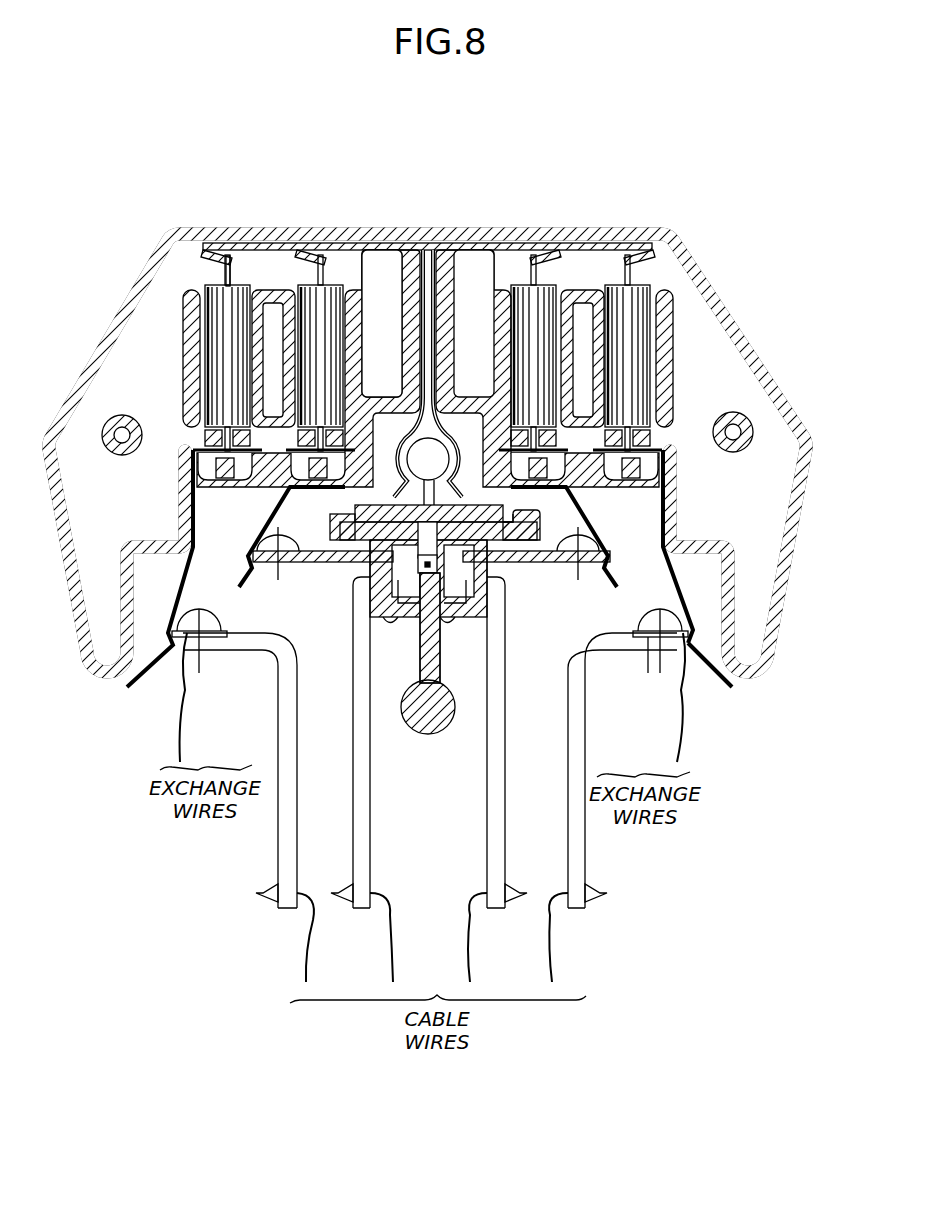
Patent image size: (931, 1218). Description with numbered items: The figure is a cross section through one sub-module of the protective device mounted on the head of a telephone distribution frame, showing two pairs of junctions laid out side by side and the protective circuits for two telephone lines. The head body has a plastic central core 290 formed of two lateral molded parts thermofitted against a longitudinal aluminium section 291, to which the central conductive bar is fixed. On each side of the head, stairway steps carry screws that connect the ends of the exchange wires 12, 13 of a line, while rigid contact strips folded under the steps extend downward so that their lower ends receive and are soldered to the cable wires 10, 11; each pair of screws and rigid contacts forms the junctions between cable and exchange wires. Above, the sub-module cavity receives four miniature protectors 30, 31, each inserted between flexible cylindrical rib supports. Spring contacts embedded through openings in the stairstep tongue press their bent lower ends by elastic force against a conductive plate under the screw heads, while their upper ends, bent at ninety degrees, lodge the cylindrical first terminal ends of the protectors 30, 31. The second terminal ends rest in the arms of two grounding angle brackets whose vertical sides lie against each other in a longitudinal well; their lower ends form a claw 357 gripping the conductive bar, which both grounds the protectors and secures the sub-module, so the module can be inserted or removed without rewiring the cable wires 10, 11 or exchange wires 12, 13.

The miniature protector 30 is at (213, 357).
The miniature protector 31 is at (336, 336).
The claw 357 is at (440, 438).
The exchange wire 13 is at (246, 590).
The exchange wire 12 is at (175, 722).
The central core 290 is at (388, 618).
The longitudinal aluminium section 291 is at (441, 652).
The cable wire 10 is at (306, 982).
The cable wire 11 is at (393, 982).